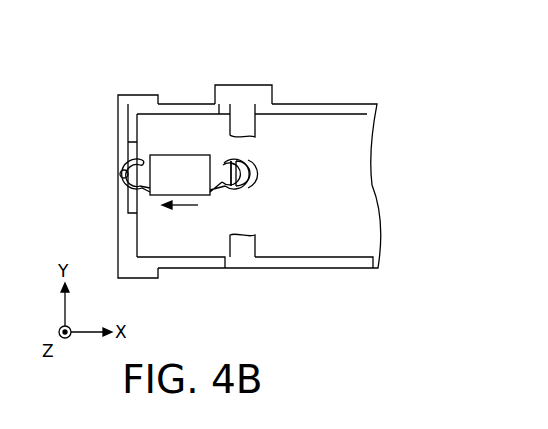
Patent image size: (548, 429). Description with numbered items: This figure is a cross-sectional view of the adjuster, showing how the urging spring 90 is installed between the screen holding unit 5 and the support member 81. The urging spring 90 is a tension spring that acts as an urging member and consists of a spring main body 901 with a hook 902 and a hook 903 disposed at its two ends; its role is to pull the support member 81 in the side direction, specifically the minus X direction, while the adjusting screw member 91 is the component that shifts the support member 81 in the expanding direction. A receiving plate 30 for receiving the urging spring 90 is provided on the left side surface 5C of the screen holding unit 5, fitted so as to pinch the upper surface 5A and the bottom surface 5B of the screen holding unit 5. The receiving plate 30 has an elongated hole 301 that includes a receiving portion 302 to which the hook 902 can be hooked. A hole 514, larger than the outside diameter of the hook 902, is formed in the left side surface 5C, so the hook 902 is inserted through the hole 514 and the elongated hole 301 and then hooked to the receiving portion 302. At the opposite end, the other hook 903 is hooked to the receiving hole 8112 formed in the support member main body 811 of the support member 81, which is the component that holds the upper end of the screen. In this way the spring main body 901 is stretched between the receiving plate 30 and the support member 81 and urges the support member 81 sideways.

The screen holding unit 5 is at (344, 104).
The upper surface 5A is at (208, 104).
The bottom surface 5B is at (214, 268).
The left side surface 5C is at (118, 246).
The receiving plate 30 is at (138, 94).
The elongated hole 301 is at (117, 152).
The receiving portion 302 is at (120, 176).
The hole 514 is at (140, 212).
The urging spring 90 is at (186, 114).
The spring main body 901 is at (170, 154).
The hook 902 is at (116, 188).
The hook 903 is at (232, 160).
The adjusting screw member 91 is at (260, 76).
The support member main body 811 is at (262, 168).
The support member 81 is at (283, 177).
The receiving hole 8112 is at (258, 182).